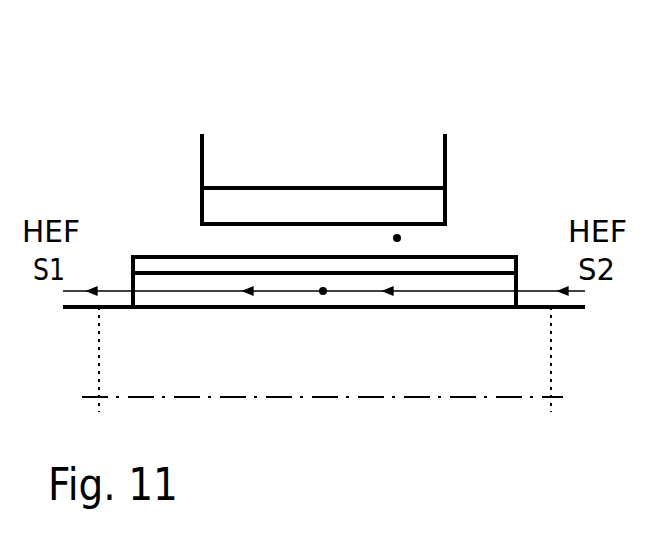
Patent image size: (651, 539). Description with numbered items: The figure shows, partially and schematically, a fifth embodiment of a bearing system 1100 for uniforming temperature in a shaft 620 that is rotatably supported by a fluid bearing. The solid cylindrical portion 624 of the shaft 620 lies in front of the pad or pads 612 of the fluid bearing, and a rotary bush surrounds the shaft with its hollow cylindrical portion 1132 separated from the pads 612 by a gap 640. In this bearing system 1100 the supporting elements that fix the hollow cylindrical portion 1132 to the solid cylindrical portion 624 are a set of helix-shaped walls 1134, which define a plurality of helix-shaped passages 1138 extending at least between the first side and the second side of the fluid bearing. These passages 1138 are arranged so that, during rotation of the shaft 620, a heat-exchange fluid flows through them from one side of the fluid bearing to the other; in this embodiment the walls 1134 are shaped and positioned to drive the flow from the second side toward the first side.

The bearing system 1100 is at (173, 148).
The pad 612 is at (260, 205).
The gap 640 is at (398, 234).
The hollow cylindrical portion 1132 is at (480, 265).
The helix-shaped walls 1134 is at (172, 285).
The helix-shaped passages 1138 is at (323, 288).
The solid cylindrical portion 624 is at (322, 397).
The shaft 620 is at (353, 373).